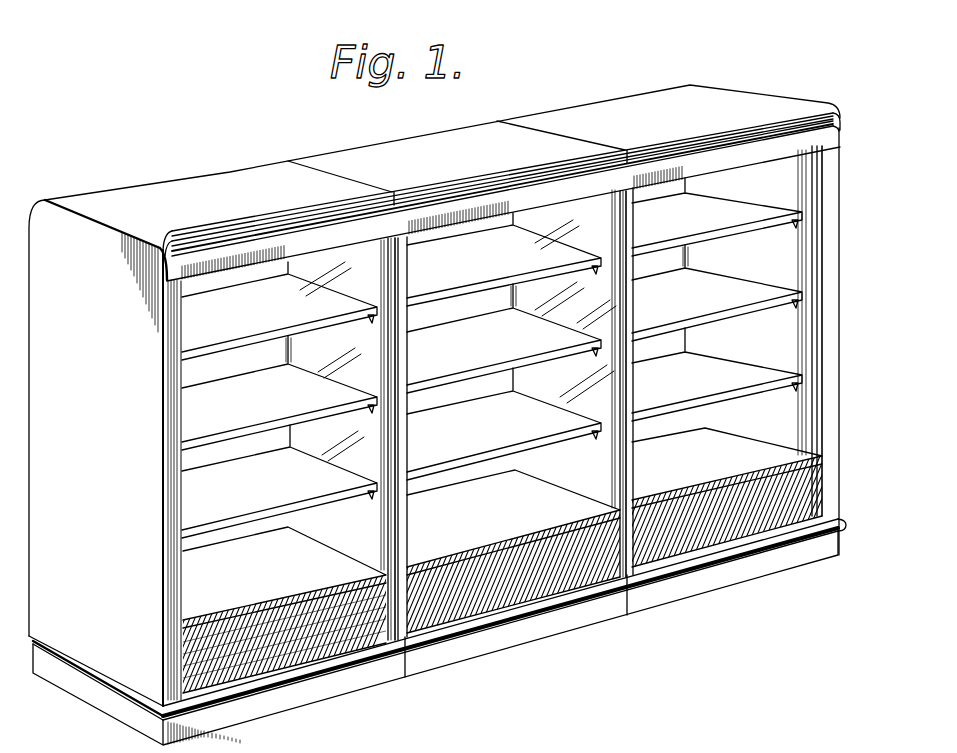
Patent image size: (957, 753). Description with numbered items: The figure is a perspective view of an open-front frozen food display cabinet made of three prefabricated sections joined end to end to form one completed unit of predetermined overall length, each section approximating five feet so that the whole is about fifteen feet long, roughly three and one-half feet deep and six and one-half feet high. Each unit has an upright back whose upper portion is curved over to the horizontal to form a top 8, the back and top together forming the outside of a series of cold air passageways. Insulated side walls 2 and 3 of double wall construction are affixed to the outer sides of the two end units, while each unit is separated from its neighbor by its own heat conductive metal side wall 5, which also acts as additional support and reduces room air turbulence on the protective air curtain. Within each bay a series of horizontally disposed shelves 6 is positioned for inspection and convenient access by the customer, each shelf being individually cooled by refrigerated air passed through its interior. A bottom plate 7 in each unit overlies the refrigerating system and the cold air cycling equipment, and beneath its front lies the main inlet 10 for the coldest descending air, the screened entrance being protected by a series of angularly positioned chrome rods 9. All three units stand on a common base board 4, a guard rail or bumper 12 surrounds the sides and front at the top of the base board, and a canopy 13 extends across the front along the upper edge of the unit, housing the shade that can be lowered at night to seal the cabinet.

The insulated side wall 2 is at (97, 430).
The insulated side wall 3 is at (822, 215).
The base board 4 is at (798, 566).
The side wall 5 is at (634, 455).
The shelves 6 is at (736, 296).
The bottom plate 7 is at (468, 522).
The top 8 is at (229, 182).
The chrome rods 9 is at (818, 486).
The main inlet 10 is at (184, 664).
The guard rail or bumper 12 is at (842, 526).
The canopy 13 is at (843, 130).